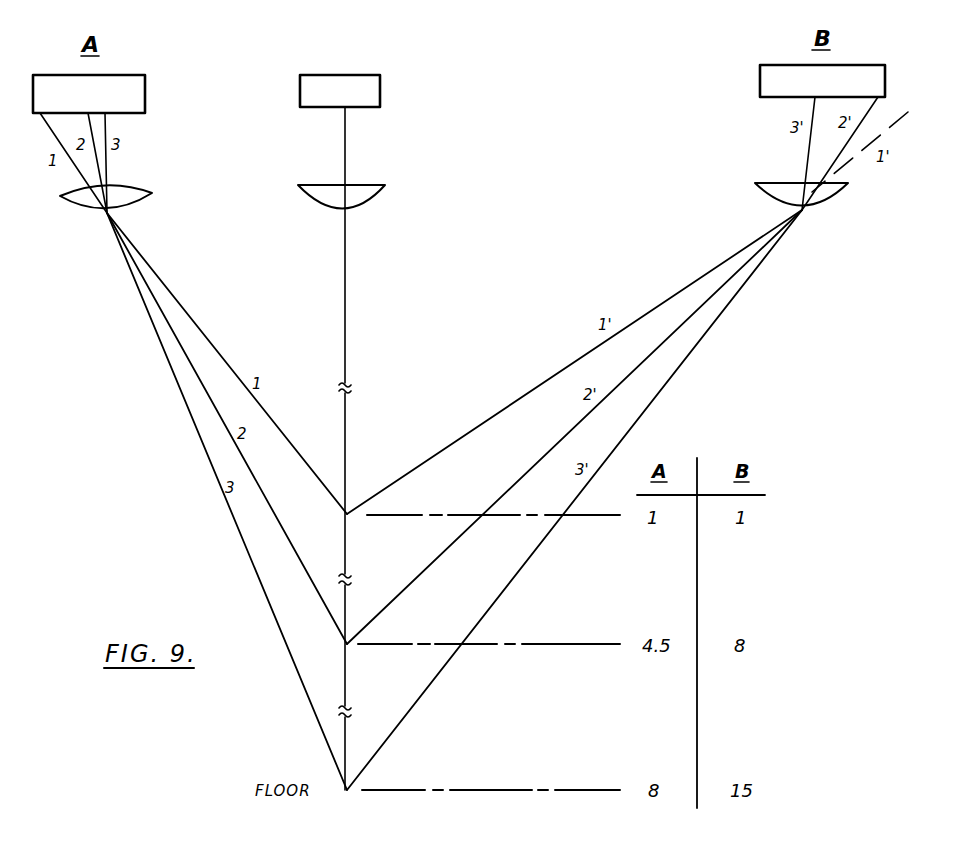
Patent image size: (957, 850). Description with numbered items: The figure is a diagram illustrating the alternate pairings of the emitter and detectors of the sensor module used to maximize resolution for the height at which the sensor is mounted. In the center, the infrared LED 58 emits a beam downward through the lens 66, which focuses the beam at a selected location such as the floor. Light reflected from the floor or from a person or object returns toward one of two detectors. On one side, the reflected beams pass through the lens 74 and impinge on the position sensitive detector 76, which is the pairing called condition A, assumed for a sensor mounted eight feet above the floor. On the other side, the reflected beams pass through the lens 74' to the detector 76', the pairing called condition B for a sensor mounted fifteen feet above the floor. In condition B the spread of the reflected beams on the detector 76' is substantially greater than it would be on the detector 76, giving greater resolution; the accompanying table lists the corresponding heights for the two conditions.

The position sensitive detector 76 is at (109, 94).
The lens 74 is at (122, 203).
The LED 58 is at (380, 92).
The lens 66 is at (362, 209).
The detector 76' is at (791, 89).
The lens 74' is at (810, 210).